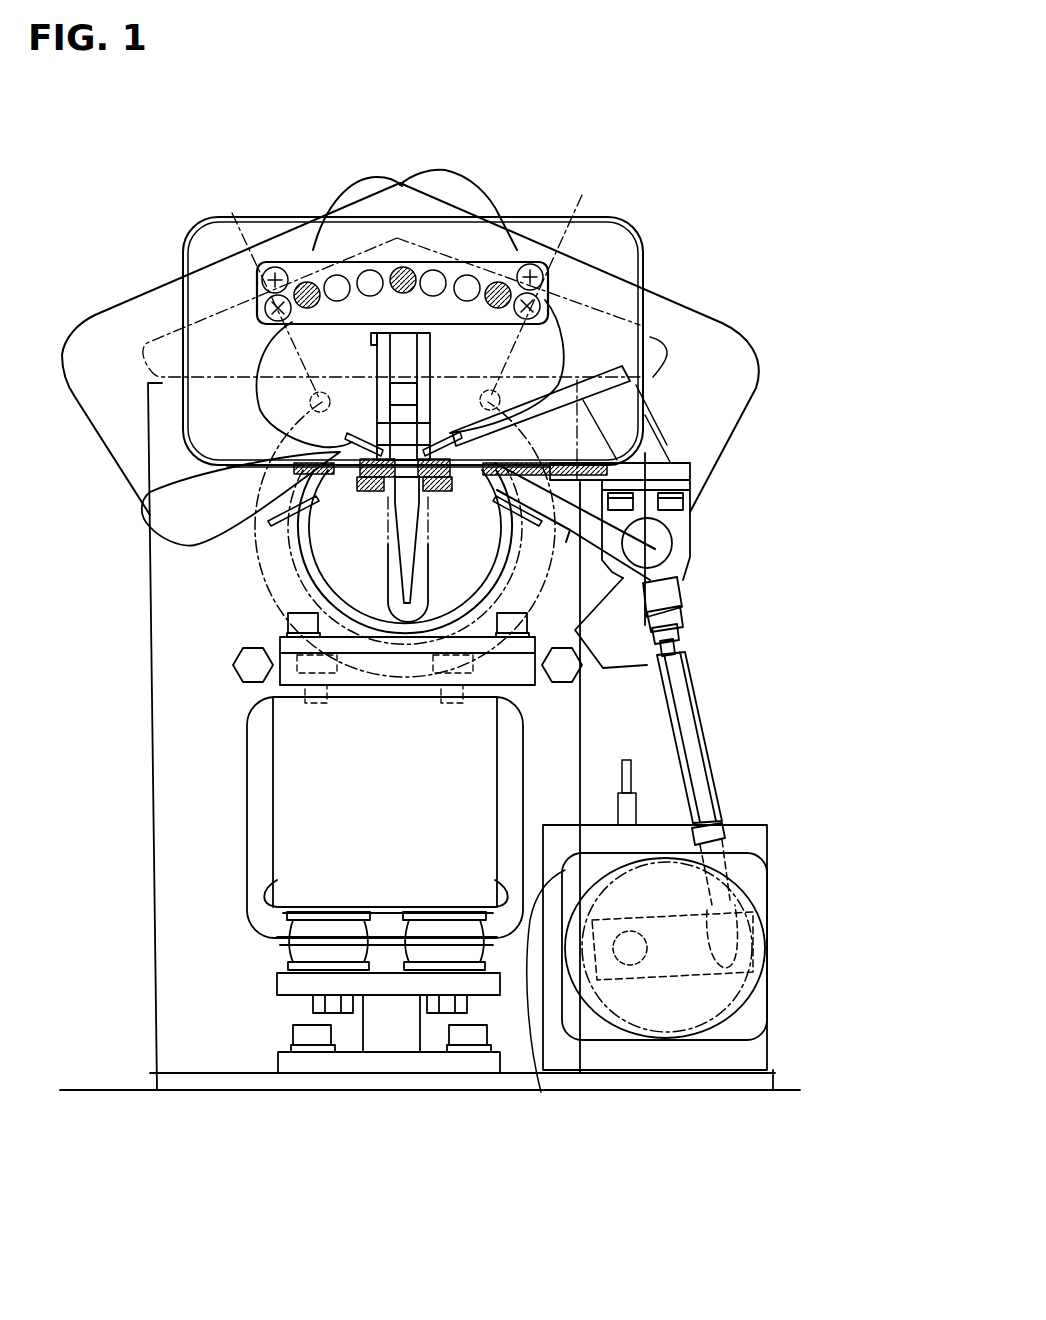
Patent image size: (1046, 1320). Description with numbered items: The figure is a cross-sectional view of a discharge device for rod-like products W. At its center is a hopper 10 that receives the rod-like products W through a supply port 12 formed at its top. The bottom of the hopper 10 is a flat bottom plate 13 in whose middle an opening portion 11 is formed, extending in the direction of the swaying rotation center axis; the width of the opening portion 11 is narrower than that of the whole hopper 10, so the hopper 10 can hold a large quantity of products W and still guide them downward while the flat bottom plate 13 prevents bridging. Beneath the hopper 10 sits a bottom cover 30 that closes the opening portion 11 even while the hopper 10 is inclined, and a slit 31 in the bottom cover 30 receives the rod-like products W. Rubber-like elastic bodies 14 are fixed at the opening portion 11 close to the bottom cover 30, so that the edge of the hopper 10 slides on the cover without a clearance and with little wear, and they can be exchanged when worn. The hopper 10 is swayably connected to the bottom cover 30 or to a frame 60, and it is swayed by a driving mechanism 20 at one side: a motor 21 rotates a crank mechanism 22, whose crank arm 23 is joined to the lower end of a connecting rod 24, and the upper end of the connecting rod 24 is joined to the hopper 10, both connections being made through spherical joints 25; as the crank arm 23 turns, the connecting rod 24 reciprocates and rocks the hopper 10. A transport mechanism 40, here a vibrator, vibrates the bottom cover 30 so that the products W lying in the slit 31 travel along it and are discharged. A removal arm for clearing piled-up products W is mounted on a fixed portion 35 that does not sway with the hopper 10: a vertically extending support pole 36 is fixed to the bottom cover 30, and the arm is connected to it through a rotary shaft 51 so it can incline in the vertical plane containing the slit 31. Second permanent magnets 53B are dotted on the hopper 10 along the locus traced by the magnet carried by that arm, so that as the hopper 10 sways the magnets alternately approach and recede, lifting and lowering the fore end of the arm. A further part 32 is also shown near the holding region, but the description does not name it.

The hopper 10 is at (681, 223).
The opening portion 11 is at (450, 433).
The supply port 12 is at (540, 201).
The flat bottom plate 13 is at (672, 508).
The rubber-like elastic bodies 14 is at (265, 500).
The driving mechanism 20 is at (719, 930).
The motor 21 is at (541, 1092).
The crank mechanism 22 is at (760, 801).
The crank arm 23 is at (720, 997).
The connecting rod 24 is at (703, 717).
The spherical joints 25 is at (670, 547).
The bottom cover 30 is at (300, 530).
The slit 31 is at (305, 545).
The holding member 32 is at (352, 418).
The fixed portion 35 is at (417, 328).
The support pole 36 is at (432, 345).
The transport mechanism 40 is at (228, 794).
The rotary shaft 51 is at (374, 342).
The second permanent magnet 53B is at (307, 292).
The frame 60 is at (150, 633).
The rod-like products W is at (390, 493).